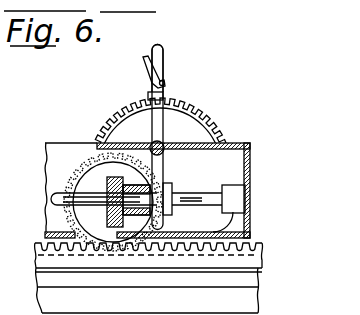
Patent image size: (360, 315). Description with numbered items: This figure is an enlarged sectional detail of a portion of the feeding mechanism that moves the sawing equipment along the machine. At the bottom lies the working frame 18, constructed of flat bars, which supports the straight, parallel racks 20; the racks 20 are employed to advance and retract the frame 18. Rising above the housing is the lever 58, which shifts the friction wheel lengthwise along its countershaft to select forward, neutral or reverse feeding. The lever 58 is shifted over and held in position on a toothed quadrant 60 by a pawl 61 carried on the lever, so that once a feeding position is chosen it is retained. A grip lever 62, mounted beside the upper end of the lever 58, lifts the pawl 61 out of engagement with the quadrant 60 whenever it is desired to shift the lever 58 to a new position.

The lever 58 is at (163, 53).
The grip lever 62 is at (149, 75).
The pawl 61 is at (148, 96).
The quadrant 60 is at (203, 124).
The rack 20 is at (246, 259).
The working frame 18 is at (244, 308).